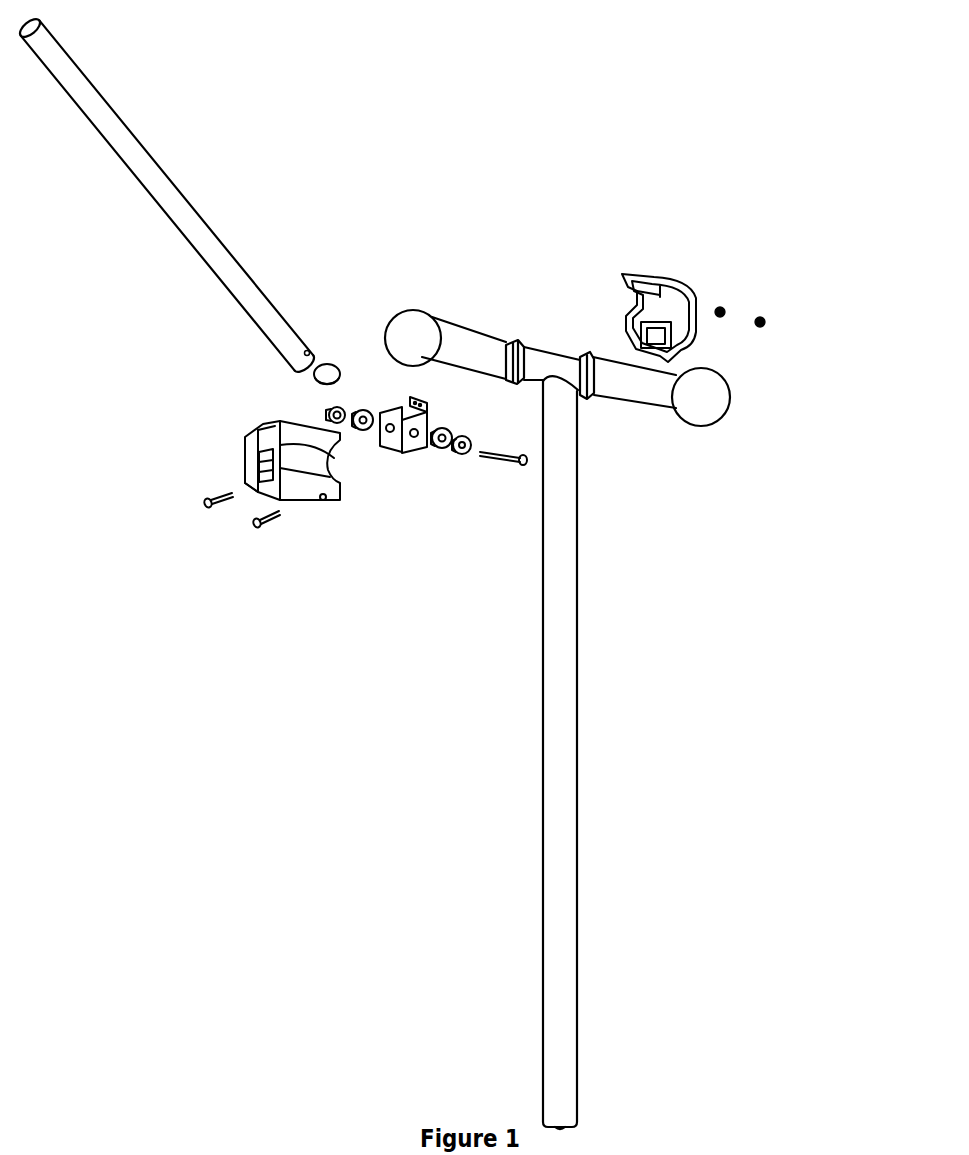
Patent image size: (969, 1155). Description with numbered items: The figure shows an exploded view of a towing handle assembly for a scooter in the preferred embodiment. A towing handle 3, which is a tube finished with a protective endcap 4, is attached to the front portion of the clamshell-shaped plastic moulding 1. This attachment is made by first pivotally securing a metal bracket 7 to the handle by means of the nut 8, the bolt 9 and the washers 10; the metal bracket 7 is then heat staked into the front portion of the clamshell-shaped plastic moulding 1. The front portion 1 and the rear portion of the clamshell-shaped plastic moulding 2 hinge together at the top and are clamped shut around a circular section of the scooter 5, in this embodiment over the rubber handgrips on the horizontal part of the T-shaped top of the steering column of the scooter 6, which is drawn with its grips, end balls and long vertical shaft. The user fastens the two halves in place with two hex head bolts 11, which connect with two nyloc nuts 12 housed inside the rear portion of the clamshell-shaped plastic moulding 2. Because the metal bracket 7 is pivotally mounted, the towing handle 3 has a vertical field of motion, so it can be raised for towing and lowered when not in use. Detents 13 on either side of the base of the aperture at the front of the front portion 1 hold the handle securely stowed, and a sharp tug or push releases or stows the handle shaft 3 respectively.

The front portion of the clamshell-shaped plastic moulding 1 is at (238, 448).
The rear portion of the clamshell-shaped plastic moulding 2 is at (618, 305).
The towing handle 3 is at (137, 183).
The protective endcap 4 is at (333, 362).
The scooter 5 is at (583, 515).
The steering column of a scooter 6 is at (473, 322).
The metal bracket 7 is at (387, 405).
The nut 8 is at (329, 413).
The bolt 9 is at (493, 473).
The washers 10 is at (453, 456).
The hex head bolts 11 is at (248, 530).
The nyloc nuts 12 is at (758, 318).
The detents 13 is at (167, 482).